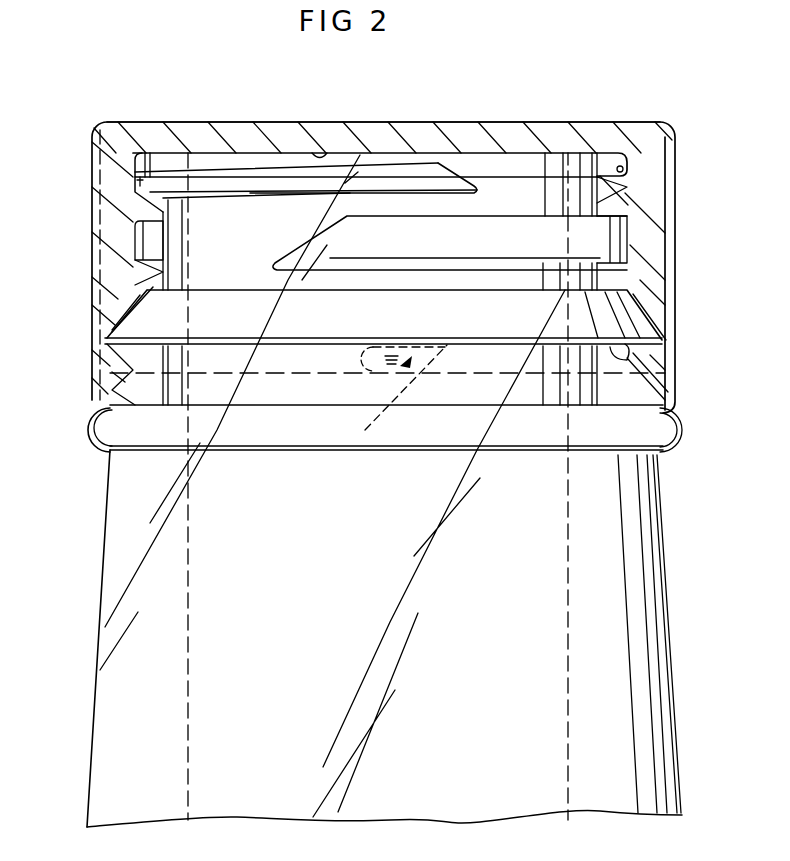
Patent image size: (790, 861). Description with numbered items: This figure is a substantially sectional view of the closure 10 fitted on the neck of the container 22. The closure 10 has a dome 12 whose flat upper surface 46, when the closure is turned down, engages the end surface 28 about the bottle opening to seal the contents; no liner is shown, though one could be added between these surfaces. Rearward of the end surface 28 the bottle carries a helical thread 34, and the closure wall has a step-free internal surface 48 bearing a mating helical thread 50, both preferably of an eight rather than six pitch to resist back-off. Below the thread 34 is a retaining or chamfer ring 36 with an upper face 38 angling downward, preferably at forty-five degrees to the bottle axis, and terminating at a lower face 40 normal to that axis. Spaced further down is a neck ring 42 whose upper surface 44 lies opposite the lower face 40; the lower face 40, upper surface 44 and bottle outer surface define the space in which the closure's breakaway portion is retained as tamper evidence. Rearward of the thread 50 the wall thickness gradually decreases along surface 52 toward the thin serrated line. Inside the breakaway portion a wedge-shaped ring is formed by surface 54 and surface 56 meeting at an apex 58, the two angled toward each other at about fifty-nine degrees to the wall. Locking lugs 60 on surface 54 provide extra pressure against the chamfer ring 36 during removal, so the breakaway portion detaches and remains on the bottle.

The closure 10 is at (105, 118).
The dome 12 is at (413, 135).
The container 22 is at (104, 574).
The end surface 28 is at (178, 160).
The helical thread 34 is at (140, 183).
The chamfer ring 36 is at (652, 303).
The upper face 38 is at (662, 325).
The lower face 40 is at (648, 353).
The neck ring 42 is at (107, 447).
The upper surface 44 is at (100, 396).
The flat upper surface 46 is at (318, 165).
The internal surface 48 is at (630, 170).
The helical thread 50 is at (632, 258).
The surface 52 is at (113, 320).
The surface 54 is at (110, 342).
The surface 56 is at (113, 381).
The apex 58 is at (112, 388).
The lugs 60 is at (366, 430).